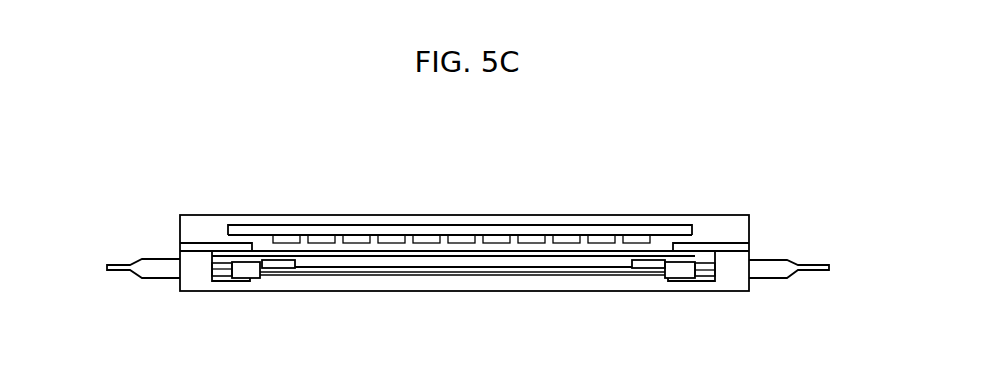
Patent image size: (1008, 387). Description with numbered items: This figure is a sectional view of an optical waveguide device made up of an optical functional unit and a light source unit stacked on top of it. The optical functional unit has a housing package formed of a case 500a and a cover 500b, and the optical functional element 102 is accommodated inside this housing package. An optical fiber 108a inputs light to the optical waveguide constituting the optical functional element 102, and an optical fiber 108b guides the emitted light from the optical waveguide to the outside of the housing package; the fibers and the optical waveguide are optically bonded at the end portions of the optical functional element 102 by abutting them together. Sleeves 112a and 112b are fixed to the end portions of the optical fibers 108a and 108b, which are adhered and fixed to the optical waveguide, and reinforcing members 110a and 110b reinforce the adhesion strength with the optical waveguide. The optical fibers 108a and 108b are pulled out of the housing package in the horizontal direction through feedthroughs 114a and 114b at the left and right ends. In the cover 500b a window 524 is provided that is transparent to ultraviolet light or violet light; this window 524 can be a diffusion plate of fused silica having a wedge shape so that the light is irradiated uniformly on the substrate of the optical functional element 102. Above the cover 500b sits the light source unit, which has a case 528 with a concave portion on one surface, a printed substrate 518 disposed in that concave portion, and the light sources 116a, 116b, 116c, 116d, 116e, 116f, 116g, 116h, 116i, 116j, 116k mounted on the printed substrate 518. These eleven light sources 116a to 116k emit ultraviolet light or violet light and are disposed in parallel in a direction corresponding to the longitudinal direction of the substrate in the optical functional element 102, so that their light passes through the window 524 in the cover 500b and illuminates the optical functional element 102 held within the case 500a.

The optical functional element 102 is at (543, 273).
The optical fiber 108a is at (123, 278).
The optical fiber 108b is at (700, 278).
The reinforcing member 110a is at (283, 270).
The reinforcing member 110b is at (648, 268).
The sleeve 112a is at (247, 279).
The sleeve 112b is at (684, 279).
The feedthrough 114a is at (137, 257).
The feedthrough 114b is at (784, 266).
The light source 116a is at (282, 234).
The light source 116b is at (317, 234).
The light source 116c is at (352, 234).
The light source 116d is at (387, 234).
The light source 116e is at (422, 234).
The light source 116f is at (457, 234).
The light source 116g is at (492, 234).
The light source 116h is at (527, 234).
The light source 116i is at (562, 234).
The light source 116j is at (597, 234).
The light source 116k is at (632, 234).
The case 500a is at (447, 284).
The cover 500b is at (178, 245).
The printed substrate 518 is at (670, 228).
The window 524 is at (373, 257).
The case 528 is at (223, 226).